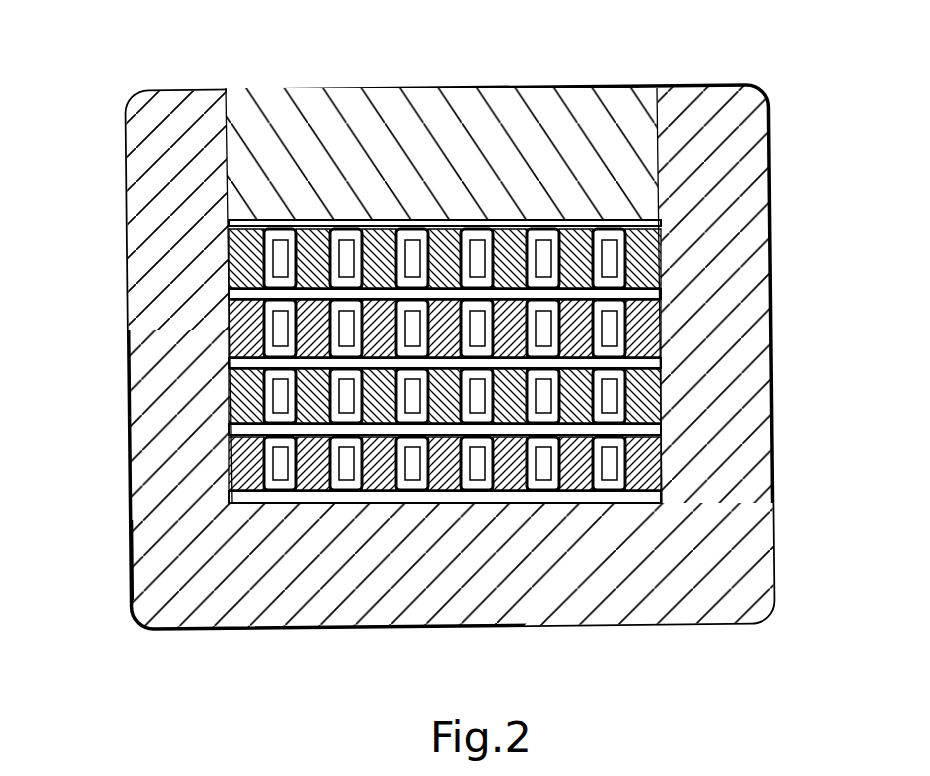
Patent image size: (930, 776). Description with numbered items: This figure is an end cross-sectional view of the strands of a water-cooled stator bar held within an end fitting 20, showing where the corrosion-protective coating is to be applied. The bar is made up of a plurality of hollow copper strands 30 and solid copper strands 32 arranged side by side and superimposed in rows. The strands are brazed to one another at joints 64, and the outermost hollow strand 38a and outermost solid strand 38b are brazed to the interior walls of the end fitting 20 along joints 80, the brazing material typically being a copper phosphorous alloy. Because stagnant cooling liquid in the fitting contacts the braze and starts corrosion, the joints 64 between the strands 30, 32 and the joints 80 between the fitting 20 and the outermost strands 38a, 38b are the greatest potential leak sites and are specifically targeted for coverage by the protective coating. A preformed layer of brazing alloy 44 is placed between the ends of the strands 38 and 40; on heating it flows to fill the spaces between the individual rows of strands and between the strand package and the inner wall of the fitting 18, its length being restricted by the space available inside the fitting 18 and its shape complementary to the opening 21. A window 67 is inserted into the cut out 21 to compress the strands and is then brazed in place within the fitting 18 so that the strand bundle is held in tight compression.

The fitting 18 is at (133, 547).
The end fitting 20 is at (745, 184).
The cut out 21 is at (653, 142).
The hollow copper strands 30 is at (614, 318).
The solid copper strands 32 is at (652, 402).
The strand ends 38 is at (648, 255).
The outermost hollow strand 38a is at (282, 474).
The outermost solid strand 38b is at (648, 468).
The strand ends 40 is at (612, 480).
The brazing alloy 44 is at (576, 498).
The brazed joints 64 is at (385, 474).
The window 67 is at (583, 97).
The brazed joints 80 is at (277, 222).